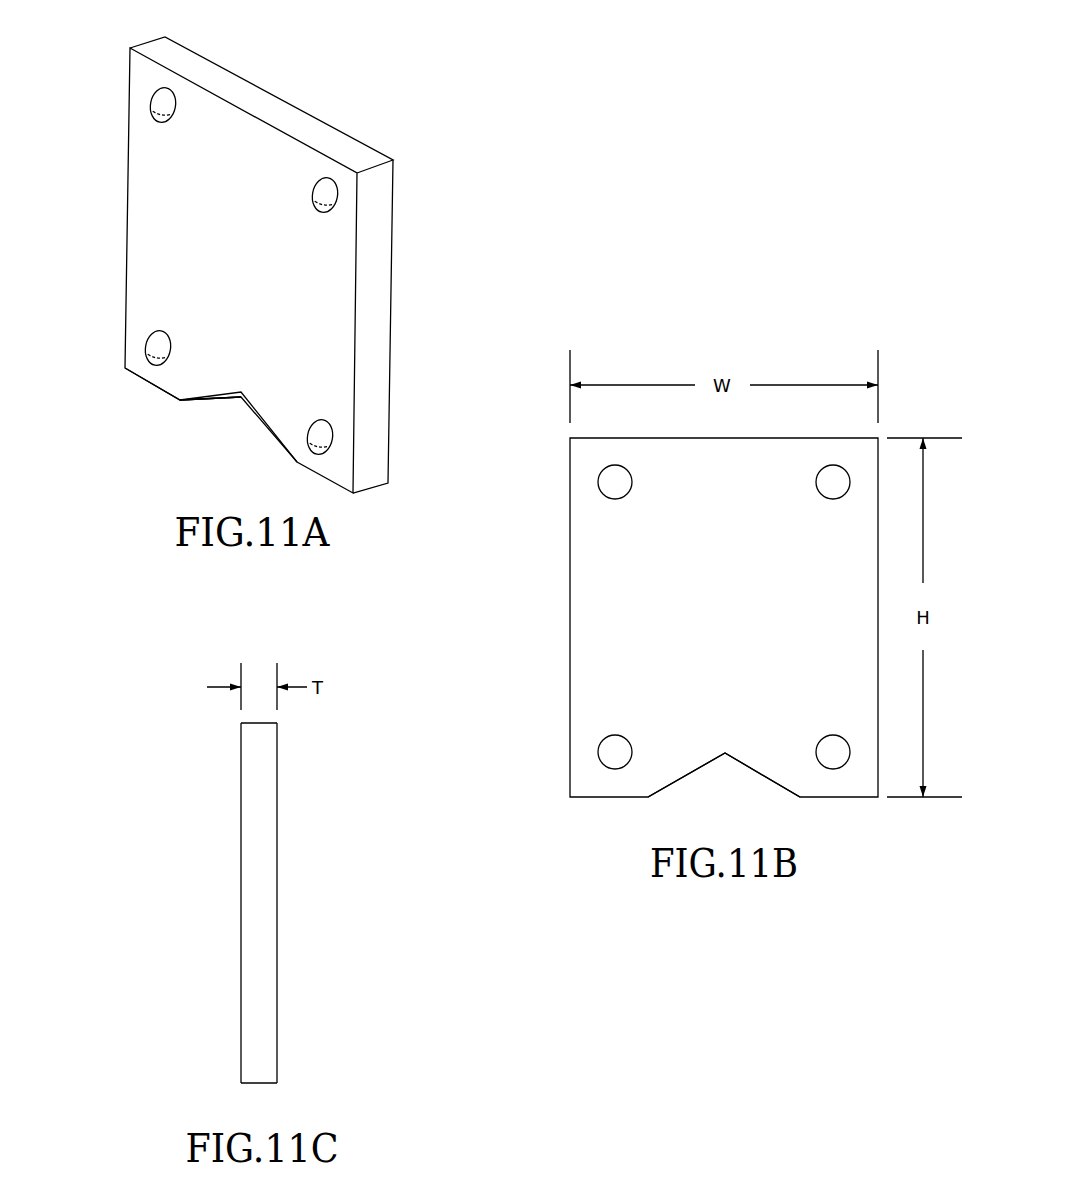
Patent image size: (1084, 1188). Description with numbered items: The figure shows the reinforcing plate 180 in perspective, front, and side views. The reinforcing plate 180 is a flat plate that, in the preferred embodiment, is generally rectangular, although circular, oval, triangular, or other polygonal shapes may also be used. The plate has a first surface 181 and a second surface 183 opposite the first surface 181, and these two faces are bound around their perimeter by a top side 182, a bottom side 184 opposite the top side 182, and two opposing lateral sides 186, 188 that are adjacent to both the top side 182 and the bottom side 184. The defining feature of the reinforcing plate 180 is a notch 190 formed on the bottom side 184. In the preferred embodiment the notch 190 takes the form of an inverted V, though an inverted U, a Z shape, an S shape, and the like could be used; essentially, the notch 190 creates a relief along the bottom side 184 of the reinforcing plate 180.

In FIG. 11A, the reinforcing plate 180 is at (273, 259).
In FIG. 11B, the reinforcing plate 180 is at (660, 560).
In FIG. 11C, the reinforcing plate 180 is at (264, 922).
In FIG. 11A, the first surface 181 is at (170, 283).
In FIG. 11C, the first surface 181 is at (227, 860).
In FIG. 11A, the top side 182 is at (273, 88).
In FIG. 11C, the second surface 183 is at (282, 847).
In FIG. 11A, the bottom side 184 is at (145, 397).
In FIG. 11B, the bottom side 184 is at (615, 802).
In FIG. 11C, the bottom side 184 is at (257, 1088).
In FIG. 11A, the lateral side 186 is at (271, 259).
In FIG. 11B, the lateral side 186 is at (660, 652).
In FIG. 11A, the lateral side 188 is at (397, 273).
In FIG. 11C, the lateral side 188 is at (258, 880).
In FIG. 11A, the notch 190 is at (237, 417).
In FIG. 11B, the notch 190 is at (732, 788).